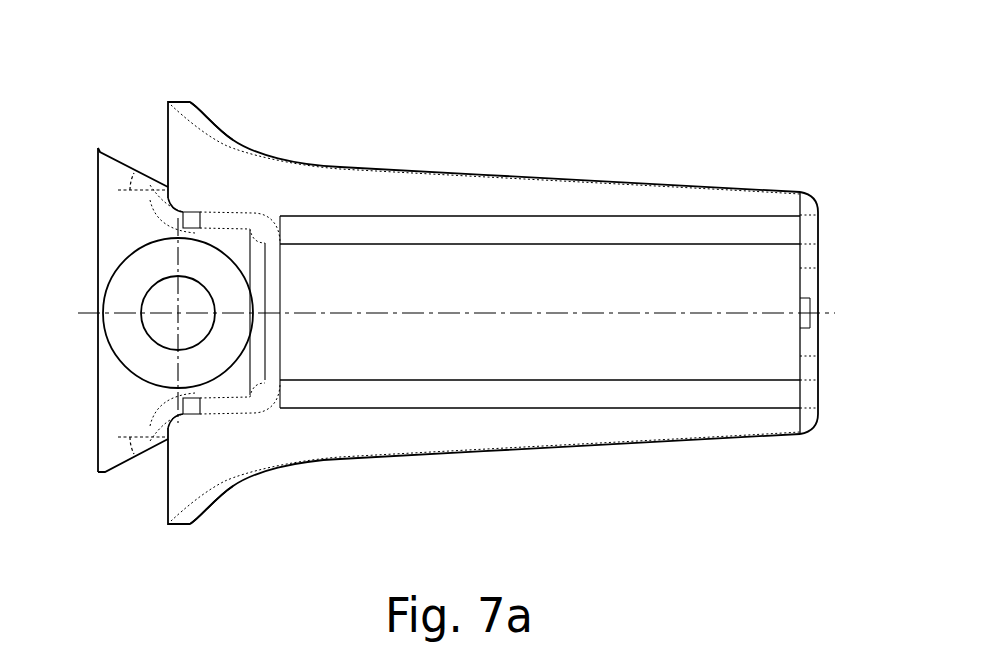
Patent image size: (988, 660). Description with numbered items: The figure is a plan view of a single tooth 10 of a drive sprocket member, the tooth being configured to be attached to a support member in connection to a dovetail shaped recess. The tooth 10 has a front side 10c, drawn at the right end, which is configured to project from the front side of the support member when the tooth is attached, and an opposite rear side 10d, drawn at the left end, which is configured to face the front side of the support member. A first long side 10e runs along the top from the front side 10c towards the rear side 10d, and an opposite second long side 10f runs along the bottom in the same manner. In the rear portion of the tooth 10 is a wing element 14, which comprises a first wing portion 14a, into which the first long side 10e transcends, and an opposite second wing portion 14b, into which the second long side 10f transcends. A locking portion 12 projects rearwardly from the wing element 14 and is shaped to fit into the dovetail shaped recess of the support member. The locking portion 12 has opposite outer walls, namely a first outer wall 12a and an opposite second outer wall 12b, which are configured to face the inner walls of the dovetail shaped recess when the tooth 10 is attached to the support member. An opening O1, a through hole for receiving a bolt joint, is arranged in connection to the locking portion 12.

The tooth 10 is at (531, 302).
The front side 10c is at (818, 290).
The rear side 10d is at (97, 417).
The first long side 10e is at (437, 170).
The second long side 10f is at (475, 450).
The locking portion 12 is at (86, 321).
The first outer wall 12a is at (116, 158).
The second outer wall 12b is at (117, 468).
The wing element 14 is at (205, 327).
The first wing portion 14a is at (220, 117).
The second wing portion 14b is at (210, 518).
The opening O1 is at (130, 354).